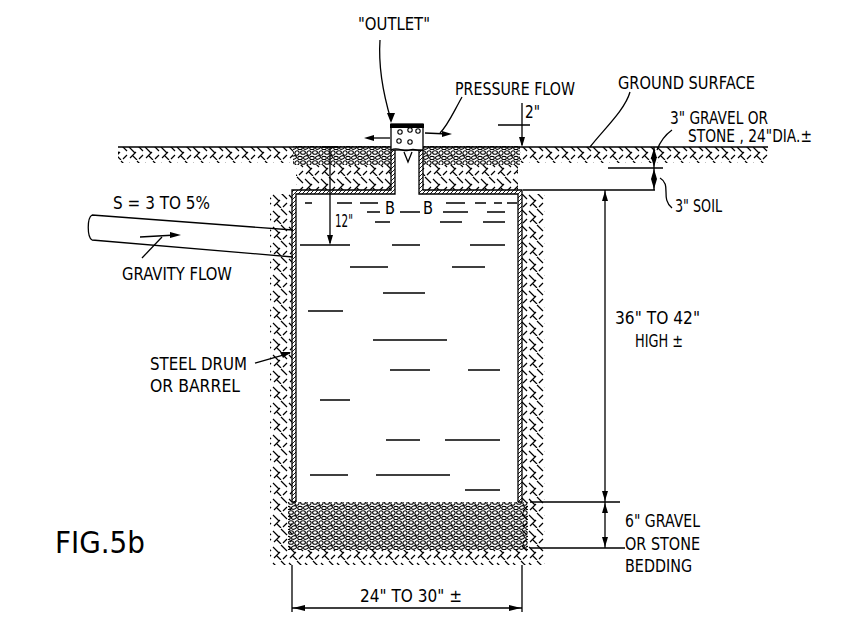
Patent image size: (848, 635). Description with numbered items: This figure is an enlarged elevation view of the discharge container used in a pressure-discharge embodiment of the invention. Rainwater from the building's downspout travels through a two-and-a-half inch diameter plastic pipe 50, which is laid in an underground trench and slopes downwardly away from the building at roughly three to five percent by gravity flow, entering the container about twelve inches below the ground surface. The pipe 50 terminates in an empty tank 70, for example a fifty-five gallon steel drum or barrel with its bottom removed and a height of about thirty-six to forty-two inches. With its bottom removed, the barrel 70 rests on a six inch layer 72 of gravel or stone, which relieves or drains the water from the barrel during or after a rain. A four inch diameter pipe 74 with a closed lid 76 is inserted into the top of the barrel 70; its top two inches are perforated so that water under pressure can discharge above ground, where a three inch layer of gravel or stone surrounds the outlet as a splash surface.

The plastic pipe 50 is at (92, 228).
The tank 70 is at (290, 310).
The layer of gravel or stone 72 is at (290, 523).
The four inch diameter pipe 74 is at (391, 133).
The closed lid 76 is at (416, 124).